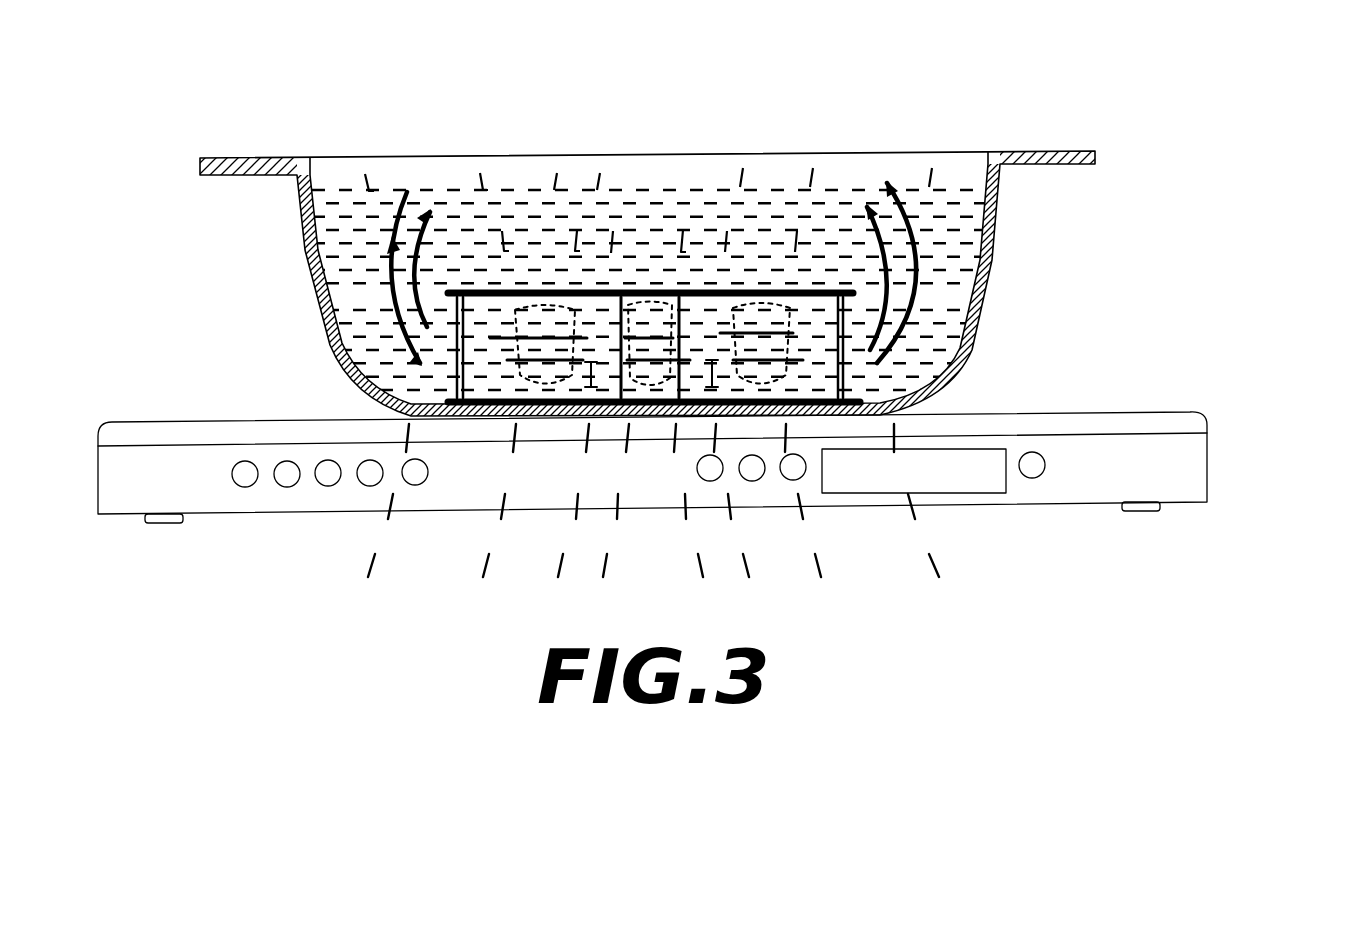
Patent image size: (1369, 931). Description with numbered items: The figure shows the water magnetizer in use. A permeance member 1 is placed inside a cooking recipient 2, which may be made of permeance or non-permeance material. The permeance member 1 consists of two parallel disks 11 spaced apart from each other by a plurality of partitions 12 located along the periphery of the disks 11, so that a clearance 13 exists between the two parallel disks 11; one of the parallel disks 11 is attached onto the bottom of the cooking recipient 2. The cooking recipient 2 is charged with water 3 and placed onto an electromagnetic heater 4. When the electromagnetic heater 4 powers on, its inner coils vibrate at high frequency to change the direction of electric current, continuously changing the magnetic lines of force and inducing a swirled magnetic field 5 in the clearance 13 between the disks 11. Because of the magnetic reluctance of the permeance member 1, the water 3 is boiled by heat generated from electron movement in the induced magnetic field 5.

The permeance member 1 is at (838, 278).
The cooking recipient 2 is at (968, 350).
The water 3 is at (348, 210).
The electromagnetic heater 4 is at (1193, 478).
The swirled magnetic field 5 is at (518, 425).
The parallel disks 11 is at (740, 285).
The partitions 12 is at (845, 333).
The clearance 13 is at (711, 288).